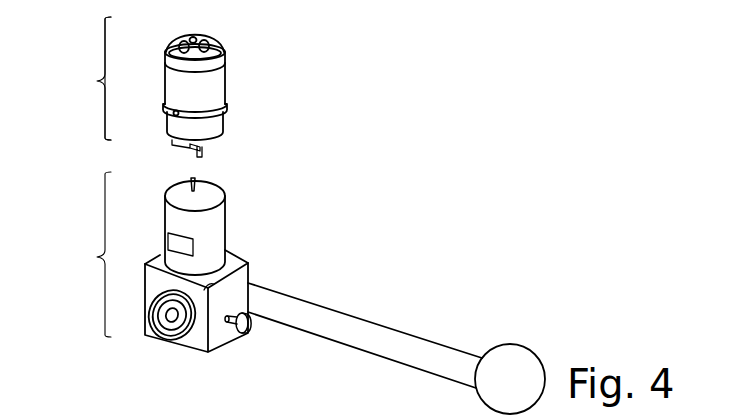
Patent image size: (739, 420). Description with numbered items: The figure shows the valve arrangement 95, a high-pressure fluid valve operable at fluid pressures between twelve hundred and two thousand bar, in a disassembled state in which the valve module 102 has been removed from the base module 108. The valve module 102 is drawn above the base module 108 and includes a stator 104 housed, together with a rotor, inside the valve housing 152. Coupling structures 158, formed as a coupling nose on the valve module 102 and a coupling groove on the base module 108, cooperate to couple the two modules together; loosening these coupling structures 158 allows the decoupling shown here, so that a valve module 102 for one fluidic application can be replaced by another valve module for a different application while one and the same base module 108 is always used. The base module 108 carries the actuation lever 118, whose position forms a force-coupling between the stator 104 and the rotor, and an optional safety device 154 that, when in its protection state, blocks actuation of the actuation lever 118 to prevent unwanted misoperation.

The valve arrangement 95 is at (497, 156).
The valve module 102 is at (79, 78).
The stator 104 is at (225, 33).
The valve housing 152 is at (214, 81).
The coupling structures 158 is at (192, 180).
The base module 108 is at (147, 262).
The safety device 154 is at (237, 336).
The actuation lever 118 is at (498, 345).